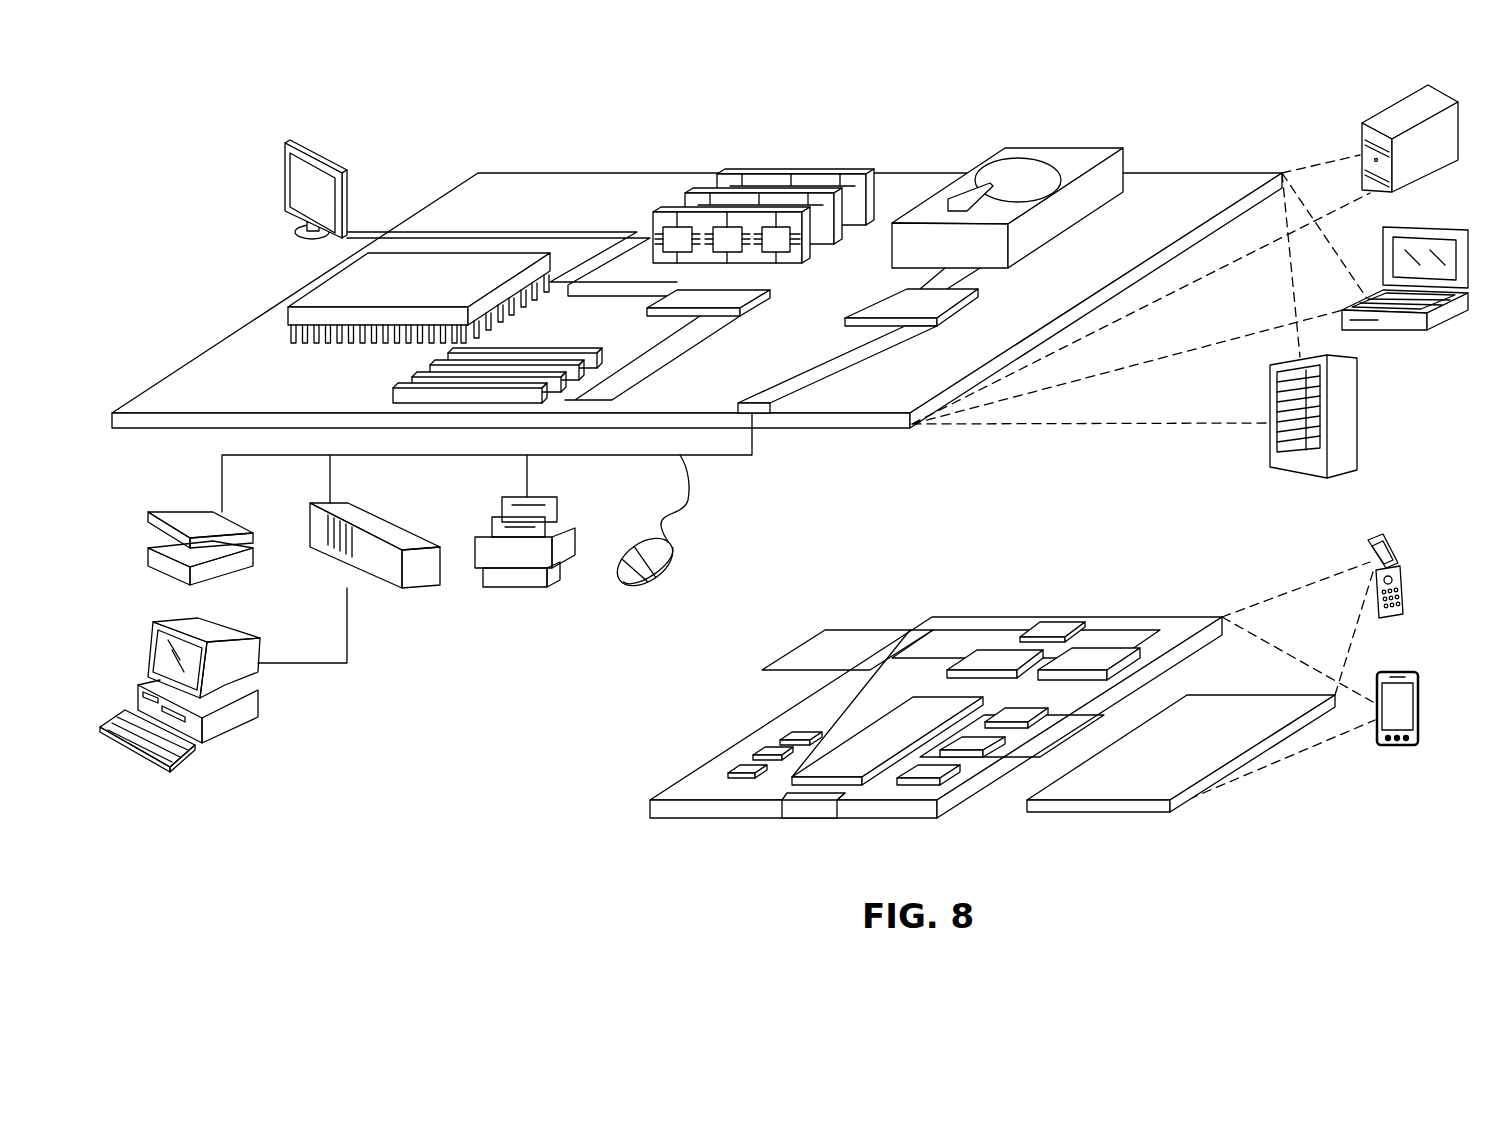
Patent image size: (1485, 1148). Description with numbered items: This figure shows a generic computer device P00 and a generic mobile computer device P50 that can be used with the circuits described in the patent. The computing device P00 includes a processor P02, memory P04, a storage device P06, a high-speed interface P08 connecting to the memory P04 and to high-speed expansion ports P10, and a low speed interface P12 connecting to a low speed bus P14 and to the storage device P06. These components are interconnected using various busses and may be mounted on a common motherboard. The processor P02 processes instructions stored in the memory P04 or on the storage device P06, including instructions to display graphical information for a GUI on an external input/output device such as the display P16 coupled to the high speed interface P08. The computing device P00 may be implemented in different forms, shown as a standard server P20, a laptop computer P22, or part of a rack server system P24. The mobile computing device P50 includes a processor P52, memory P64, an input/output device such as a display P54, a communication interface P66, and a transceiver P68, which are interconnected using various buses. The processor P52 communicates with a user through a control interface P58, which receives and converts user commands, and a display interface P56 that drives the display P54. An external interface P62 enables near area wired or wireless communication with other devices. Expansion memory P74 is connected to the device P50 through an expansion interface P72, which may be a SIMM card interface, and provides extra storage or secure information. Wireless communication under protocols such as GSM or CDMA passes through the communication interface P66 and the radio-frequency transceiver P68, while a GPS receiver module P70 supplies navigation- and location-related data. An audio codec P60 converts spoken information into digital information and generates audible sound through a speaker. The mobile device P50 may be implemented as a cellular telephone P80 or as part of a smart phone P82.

The computer device P00 is at (428, 115).
The processor P02 is at (312, 289).
The memory P04 is at (800, 170).
The storage device P06 is at (1043, 148).
The high-speed interface P08 is at (727, 292).
The high-speed expansion ports P10 is at (417, 375).
The low speed interface P12 is at (885, 298).
The low speed bus P14 is at (762, 399).
The display P16 is at (288, 142).
The standard server P20 is at (1385, 118).
The laptop computer P22 is at (1445, 220).
The rack server system P24 is at (1360, 413).
The mobile computer device P50 is at (1250, 822).
The processor P52 is at (853, 750).
The display P54 is at (1222, 715).
The display interface P56 is at (937, 773).
The control interface P58 is at (978, 745).
The audio codec P60 is at (1023, 713).
The external interface P62 is at (810, 805).
The memory P64 is at (758, 755).
The communication interface P66 is at (997, 652).
The transceiver P68 is at (1102, 655).
The GPS receiver module P70 is at (1053, 627).
The expansion interface P72 is at (915, 628).
The expansion memory P74 is at (825, 630).
The cellular telephone P80 is at (1380, 533).
The smart phone P82 is at (1389, 668).